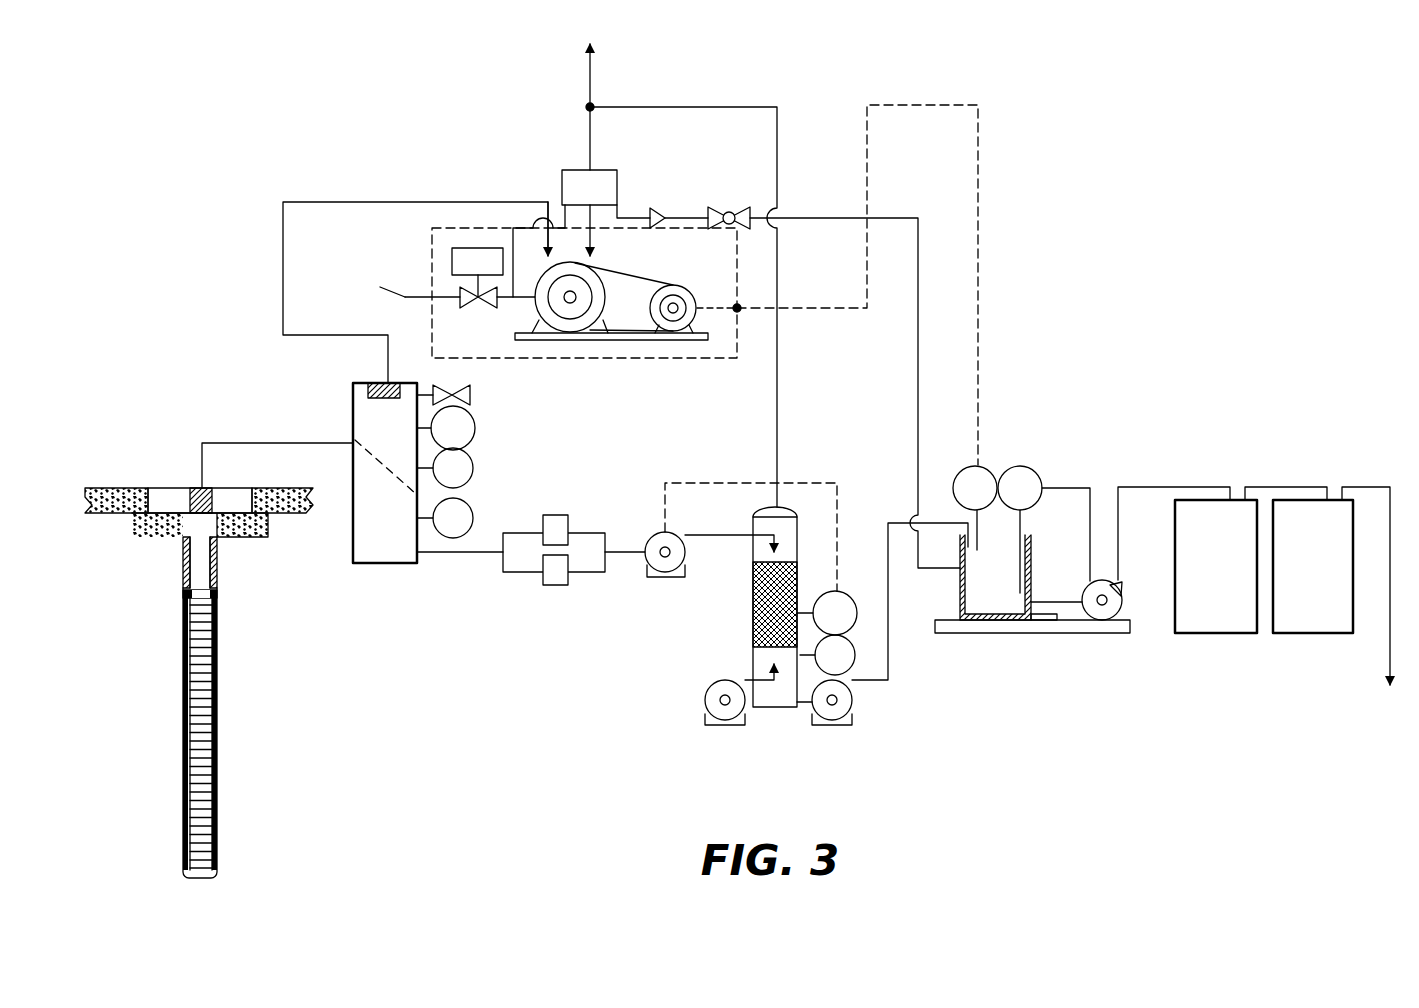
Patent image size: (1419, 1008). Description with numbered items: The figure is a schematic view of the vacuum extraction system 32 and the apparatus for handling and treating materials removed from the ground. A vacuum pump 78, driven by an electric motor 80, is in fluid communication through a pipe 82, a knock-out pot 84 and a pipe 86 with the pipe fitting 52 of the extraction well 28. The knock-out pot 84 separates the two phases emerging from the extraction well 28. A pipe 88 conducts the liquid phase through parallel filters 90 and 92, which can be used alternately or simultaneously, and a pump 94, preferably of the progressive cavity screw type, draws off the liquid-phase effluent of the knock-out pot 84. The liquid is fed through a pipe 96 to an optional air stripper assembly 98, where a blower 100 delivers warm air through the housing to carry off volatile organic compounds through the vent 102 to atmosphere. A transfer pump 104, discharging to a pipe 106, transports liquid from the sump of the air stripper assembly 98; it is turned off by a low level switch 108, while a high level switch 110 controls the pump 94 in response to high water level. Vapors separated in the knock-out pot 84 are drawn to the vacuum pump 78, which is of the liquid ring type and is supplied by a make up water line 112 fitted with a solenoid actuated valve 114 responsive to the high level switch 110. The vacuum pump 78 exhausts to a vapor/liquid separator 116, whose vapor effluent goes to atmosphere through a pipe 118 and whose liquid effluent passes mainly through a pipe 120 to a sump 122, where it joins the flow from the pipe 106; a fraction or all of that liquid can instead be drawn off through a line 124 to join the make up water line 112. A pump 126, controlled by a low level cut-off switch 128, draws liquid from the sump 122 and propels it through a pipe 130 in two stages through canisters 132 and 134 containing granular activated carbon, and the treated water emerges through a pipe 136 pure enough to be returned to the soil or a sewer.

The extraction well 28 is at (236, 745).
The vacuum extraction system 32 is at (428, 607).
The pipe fitting 52 is at (192, 500).
The vacuum pump 78 is at (598, 295).
The electric motor 80 is at (698, 306).
The pipe 82 is at (368, 201).
The knock-out pot 84 is at (412, 453).
The pipe 86 is at (301, 443).
The pipe 88 is at (482, 554).
The filter 90 is at (558, 523).
The filter 92 is at (555, 578).
The pump 94 is at (648, 540).
The pipe 96 is at (725, 538).
The air stripper assembly 98 is at (757, 617).
The blower 100 is at (710, 705).
The vent 102 is at (778, 170).
The transfer pump 104 is at (838, 708).
The pipe 106 is at (889, 598).
The low level switch 108 is at (848, 665).
The high level switch 110 is at (837, 597).
The make up water line 112 is at (383, 290).
The solenoid actuated valve 114 is at (461, 295).
The vapor/liquid separator 116 is at (562, 176).
The pipe 118 is at (591, 149).
The pipe 120 is at (761, 215).
The sump 122 is at (982, 595).
The line 124 is at (515, 229).
The pump 126 is at (1105, 608).
The low level cut-off switch 128 is at (1027, 470).
The pipe 130 is at (1148, 490).
The canister 132 is at (1220, 612).
The canister 134 is at (1313, 608).
The pipe 136 is at (1388, 637).